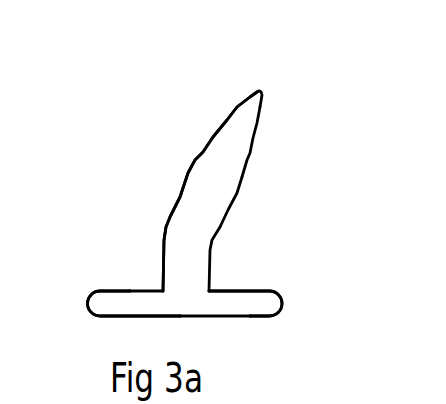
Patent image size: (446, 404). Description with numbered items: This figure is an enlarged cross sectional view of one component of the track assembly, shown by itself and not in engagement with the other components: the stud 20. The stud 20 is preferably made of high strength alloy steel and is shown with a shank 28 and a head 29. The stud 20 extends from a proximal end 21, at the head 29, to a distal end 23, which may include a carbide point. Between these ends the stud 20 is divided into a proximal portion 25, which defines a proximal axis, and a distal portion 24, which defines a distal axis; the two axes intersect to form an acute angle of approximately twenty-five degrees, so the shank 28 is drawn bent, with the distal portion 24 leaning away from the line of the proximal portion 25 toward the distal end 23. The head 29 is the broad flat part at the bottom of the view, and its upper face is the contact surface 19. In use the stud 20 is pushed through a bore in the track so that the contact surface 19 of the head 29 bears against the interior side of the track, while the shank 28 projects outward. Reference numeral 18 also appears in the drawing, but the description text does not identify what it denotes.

The upstanding flange 18 is at (186, 168).
The contact surface 19 is at (247, 287).
The stud 20 is at (123, 182).
The proximal end 21 is at (152, 287).
The distal end 23 is at (262, 92).
The distal portion 24 is at (212, 170).
The proximal portion 25 is at (185, 275).
The shank 28 is at (203, 206).
The head 29 is at (243, 307).